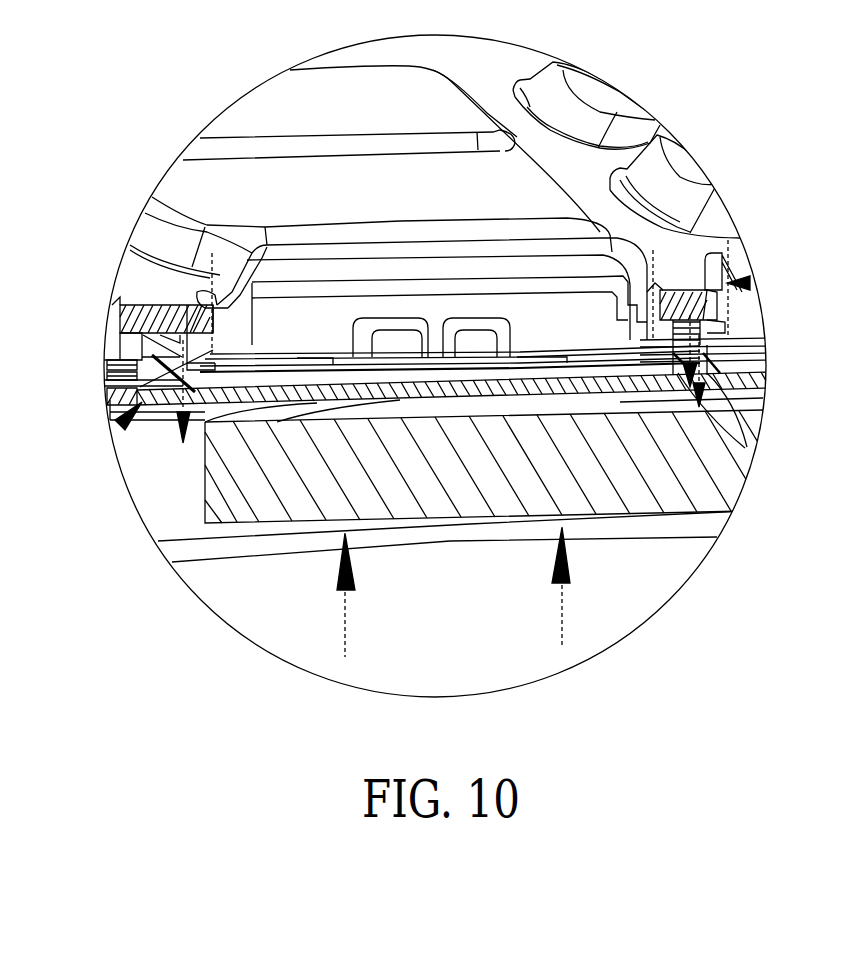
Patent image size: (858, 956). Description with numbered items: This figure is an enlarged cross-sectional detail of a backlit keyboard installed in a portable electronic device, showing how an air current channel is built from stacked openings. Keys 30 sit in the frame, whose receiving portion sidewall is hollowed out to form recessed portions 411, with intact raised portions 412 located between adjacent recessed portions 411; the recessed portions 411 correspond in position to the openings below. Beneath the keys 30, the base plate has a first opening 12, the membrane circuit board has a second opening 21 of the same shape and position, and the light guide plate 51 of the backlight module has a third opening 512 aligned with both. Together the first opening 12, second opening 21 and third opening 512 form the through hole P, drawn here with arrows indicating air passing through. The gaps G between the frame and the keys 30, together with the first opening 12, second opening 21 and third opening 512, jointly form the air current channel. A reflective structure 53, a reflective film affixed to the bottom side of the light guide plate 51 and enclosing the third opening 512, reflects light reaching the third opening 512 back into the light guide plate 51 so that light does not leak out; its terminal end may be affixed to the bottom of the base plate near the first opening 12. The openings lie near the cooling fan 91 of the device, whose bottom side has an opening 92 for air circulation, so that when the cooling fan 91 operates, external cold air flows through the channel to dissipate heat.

The keys 30 is at (293, 88).
The second opening 21 is at (657, 343).
The recessed portion 411 is at (127, 357).
The raised portion 412 is at (717, 327).
The first opening 12 is at (737, 358).
The third opening 512 is at (733, 392).
The light guide plate 51 is at (110, 398).
The reflective structure 53 is at (110, 377).
The through hole P is at (120, 432).
The gaps G is at (750, 282).
The cooling fan 91 is at (392, 493).
The opening 92 is at (453, 528).